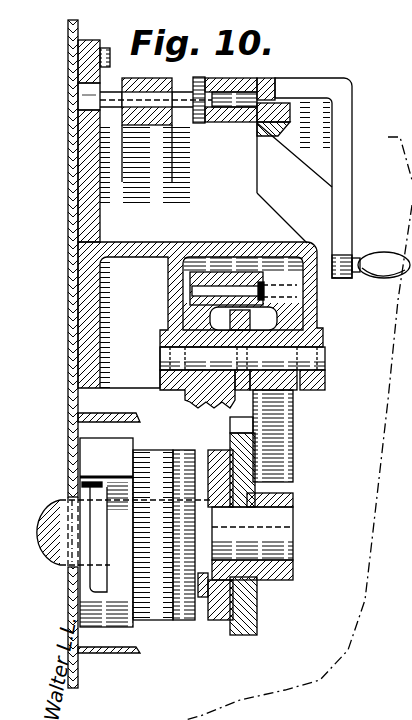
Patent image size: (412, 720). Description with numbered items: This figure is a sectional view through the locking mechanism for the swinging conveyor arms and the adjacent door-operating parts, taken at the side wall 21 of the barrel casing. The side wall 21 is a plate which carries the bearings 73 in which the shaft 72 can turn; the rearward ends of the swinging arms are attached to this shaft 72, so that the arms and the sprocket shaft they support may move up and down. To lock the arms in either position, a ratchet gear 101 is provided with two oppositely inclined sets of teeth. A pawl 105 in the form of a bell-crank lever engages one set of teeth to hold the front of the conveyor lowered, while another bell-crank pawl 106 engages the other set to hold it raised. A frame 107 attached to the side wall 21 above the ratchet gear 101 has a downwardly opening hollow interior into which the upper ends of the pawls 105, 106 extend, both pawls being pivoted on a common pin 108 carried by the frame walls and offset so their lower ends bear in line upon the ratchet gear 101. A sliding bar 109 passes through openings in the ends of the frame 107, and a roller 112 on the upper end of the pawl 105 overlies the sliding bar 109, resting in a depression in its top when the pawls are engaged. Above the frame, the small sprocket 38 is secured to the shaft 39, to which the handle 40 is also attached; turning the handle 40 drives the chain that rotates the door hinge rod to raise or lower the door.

The side wall 21 is at (75, 678).
The small sprocket 38 is at (205, 80).
The shaft 39 is at (266, 95).
The handle 40 is at (340, 236).
The shaft 72 is at (58, 503).
The bearings 73 is at (160, 615).
The ratchet gear 101 is at (252, 635).
The pawl 105 is at (200, 393).
The pawl 106 is at (290, 415).
The frame 107 is at (128, 243).
The pin 108 is at (325, 350).
The sliding bar 109 is at (252, 327).
The roller 112 is at (243, 300).